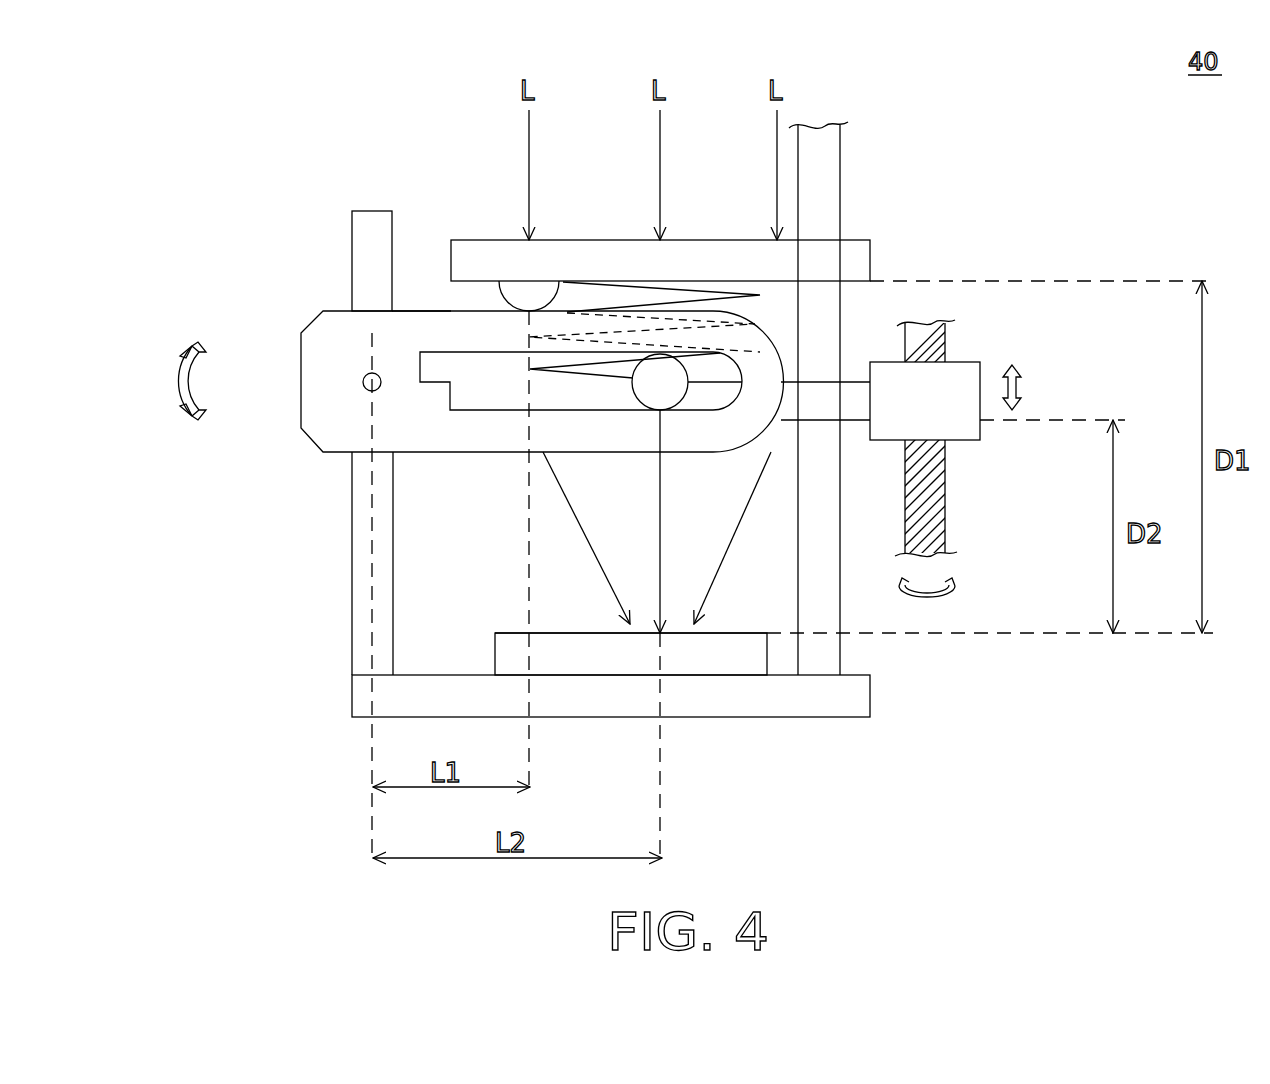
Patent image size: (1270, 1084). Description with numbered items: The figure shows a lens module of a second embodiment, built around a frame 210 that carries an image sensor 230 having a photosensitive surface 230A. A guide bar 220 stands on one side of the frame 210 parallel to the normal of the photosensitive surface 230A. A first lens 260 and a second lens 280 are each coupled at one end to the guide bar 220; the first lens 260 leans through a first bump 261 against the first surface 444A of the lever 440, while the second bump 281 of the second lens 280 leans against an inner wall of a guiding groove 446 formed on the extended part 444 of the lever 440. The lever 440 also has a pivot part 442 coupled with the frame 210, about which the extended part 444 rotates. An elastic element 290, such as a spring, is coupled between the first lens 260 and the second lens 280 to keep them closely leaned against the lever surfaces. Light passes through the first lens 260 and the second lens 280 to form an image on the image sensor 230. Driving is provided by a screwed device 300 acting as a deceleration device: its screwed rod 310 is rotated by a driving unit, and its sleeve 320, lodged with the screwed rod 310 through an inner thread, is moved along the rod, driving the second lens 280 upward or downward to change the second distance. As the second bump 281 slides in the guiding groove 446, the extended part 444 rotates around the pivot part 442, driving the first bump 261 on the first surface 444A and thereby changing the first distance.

The frame 210 is at (870, 688).
The guide bar 220 is at (840, 168).
The image sensor 230 is at (518, 633).
The photosensitive surface 230A is at (733, 633).
The first lens 260 is at (870, 253).
The first bump 261 is at (535, 296).
The second lens 280 is at (860, 380).
The second bump 281 is at (672, 397).
The elastic element 290 is at (712, 290).
The screwed device 300 is at (967, 499).
The screwed rod 310 is at (950, 527).
The sleeve 320 is at (967, 362).
The lever 440 is at (305, 320).
The pivot part 442 is at (363, 388).
The extended part 444 is at (403, 311).
The first surface 444A is at (432, 311).
The guiding groove 446 is at (446, 373).